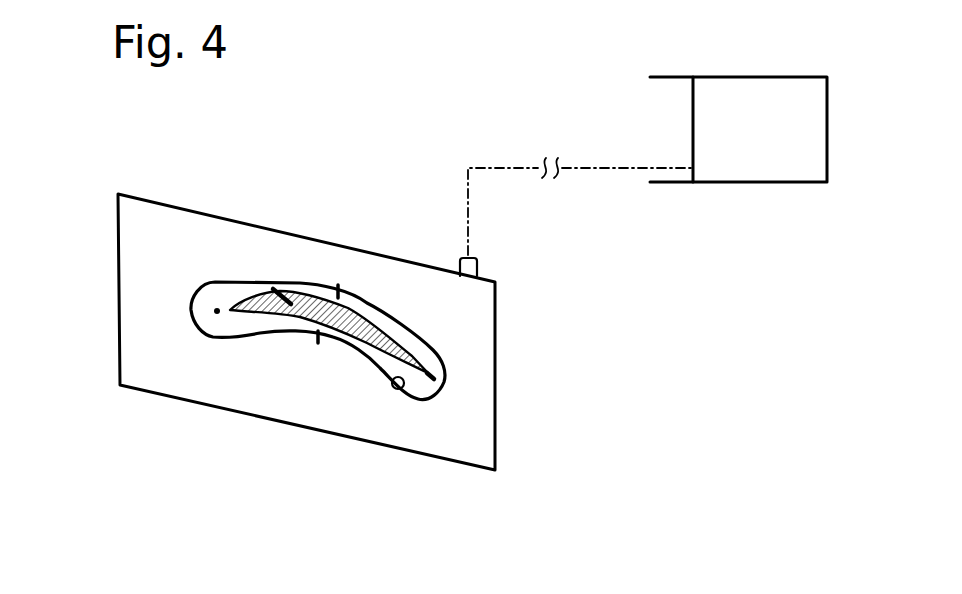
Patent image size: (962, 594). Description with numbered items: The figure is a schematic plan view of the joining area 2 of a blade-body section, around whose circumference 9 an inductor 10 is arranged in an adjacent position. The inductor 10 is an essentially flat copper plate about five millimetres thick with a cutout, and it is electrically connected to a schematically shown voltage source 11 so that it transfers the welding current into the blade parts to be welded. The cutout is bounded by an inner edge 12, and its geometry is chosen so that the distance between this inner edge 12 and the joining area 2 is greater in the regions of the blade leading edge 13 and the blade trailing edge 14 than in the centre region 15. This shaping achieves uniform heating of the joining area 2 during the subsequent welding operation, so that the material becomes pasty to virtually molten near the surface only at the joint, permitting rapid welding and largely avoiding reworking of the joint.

The joining area 2 is at (275, 290).
The circumference 9 is at (375, 320).
The inductor 10 is at (170, 387).
The voltage source 11 is at (793, 183).
The inner edge 12 is at (397, 389).
The blade leading edge 13 is at (217, 311).
The blade trailing edge 14 is at (440, 384).
The centre region 15 is at (338, 290).